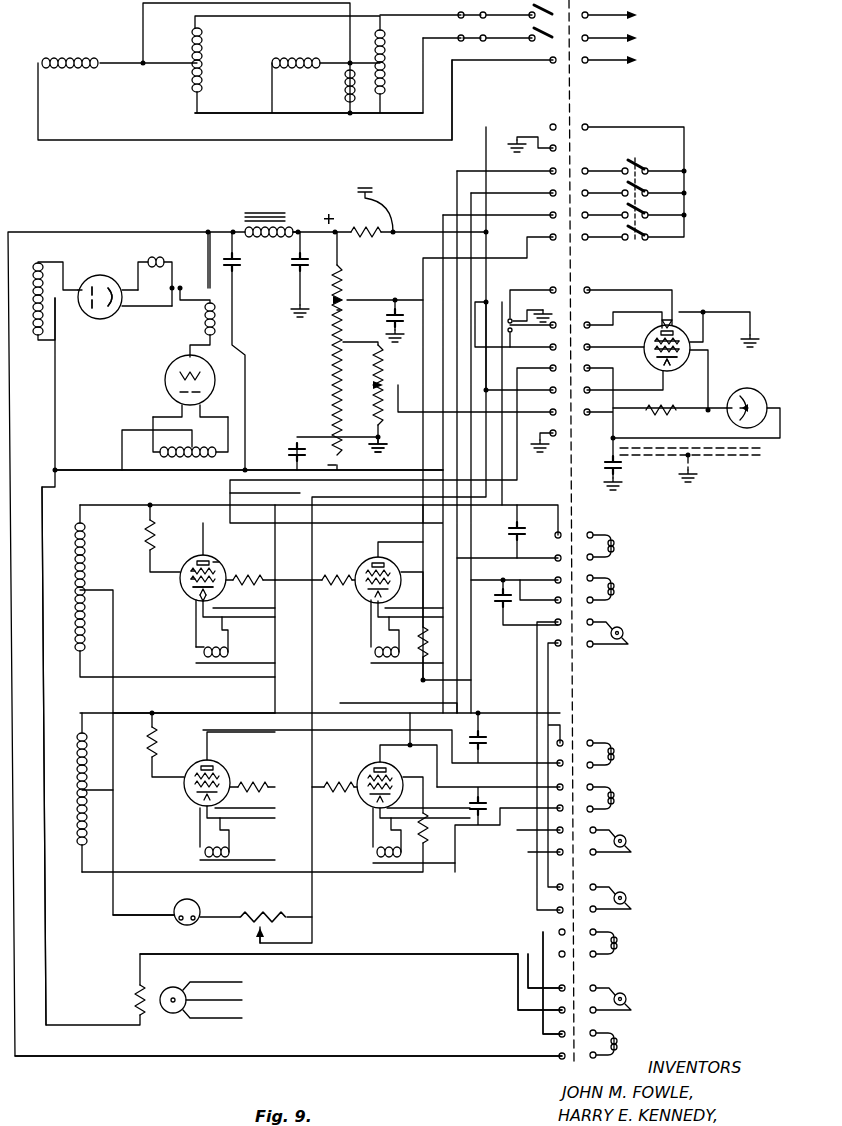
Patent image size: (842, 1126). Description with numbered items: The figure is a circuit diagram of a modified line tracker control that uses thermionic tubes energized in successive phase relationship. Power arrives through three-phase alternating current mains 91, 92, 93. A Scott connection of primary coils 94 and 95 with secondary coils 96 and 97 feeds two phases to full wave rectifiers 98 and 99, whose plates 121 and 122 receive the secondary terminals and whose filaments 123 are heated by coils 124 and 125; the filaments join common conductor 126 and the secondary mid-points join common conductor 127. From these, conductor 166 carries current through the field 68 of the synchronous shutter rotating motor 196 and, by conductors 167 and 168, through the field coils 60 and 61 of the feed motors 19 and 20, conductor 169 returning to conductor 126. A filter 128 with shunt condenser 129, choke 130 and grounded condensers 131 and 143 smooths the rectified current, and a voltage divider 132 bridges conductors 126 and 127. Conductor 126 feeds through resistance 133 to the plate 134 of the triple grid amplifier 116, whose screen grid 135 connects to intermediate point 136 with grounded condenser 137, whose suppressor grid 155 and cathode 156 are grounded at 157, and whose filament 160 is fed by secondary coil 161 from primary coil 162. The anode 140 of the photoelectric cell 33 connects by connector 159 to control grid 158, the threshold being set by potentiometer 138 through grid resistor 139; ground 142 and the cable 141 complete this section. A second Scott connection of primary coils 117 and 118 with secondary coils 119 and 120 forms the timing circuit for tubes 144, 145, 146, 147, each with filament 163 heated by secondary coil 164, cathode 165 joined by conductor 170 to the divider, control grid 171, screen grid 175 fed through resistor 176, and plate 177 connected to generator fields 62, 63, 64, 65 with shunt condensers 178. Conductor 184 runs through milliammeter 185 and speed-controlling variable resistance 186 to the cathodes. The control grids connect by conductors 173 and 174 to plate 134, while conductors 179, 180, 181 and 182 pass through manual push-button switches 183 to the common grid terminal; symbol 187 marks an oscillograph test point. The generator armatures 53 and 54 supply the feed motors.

The primary coil 95 is at (70, 52).
The primary coil 94 is at (205, 62).
The primary coil 118 is at (296, 58).
The primary coil 117 is at (386, 56).
The primary coil 162 is at (346, 91).
The alternating current main 91 is at (433, 16).
The alternating current main 93 is at (453, 95).
The alternating current main 92 is at (418, 114).
The common conductor 126 is at (209, 228).
The choke 130 is at (262, 208).
The filter 128 is at (292, 224).
The oscillograph connection symbol 187 is at (370, 188).
The resistance 133 is at (382, 236).
The conductor 181 is at (510, 171).
The conductor 182 is at (522, 193).
The conductor 179 is at (542, 215).
The shunt condenser 129 is at (243, 265).
The grounded condenser 131 is at (290, 272).
The intermediate point of voltage divider 136 is at (350, 300).
The voltage divider 132 is at (332, 312).
The grounded condenser 137 is at (384, 317).
The potentiometer 138 is at (384, 361).
The ground 142 is at (385, 440).
The grounded condenser 143 is at (292, 452).
The secondary coil 161 is at (509, 297).
The conductor 173 is at (492, 328).
The conductor 174 is at (548, 394).
The secondary coil 96 is at (42, 335).
The full wave rectifier 98 is at (117, 320).
The plate 121 is at (97, 275).
The filament 123 is at (112, 284).
The plate 122 is at (88, 320).
The filament heating coil 124 is at (168, 262).
The filament heating coil 125 is at (203, 308).
The full wave rectifier 99 is at (165, 383).
The secondary coil 97 is at (158, 450).
The conductor 166 is at (44, 510).
The common conductor 127 is at (201, 480).
The resistor 176 is at (146, 525).
The secondary coil 119 is at (84, 552).
The thermionic tube 145 is at (200, 555).
The screen grid 175 is at (220, 563).
The plate 177 is at (186, 565).
The control grid 171 is at (182, 588).
The cathode 165 is at (185, 594).
The filament 163 is at (203, 604).
The secondary coil 164 is at (236, 652).
The conductor 170 is at (310, 552).
The thermionic tube 147 is at (372, 558).
The conductor 180 is at (422, 513).
The condenser 178 is at (508, 533).
The conductor 184 is at (113, 693).
The thermionic tube 146 is at (204, 758).
The thermionic tube 144 is at (372, 759).
The secondary coil 120 is at (80, 846).
The milliammeter 185 is at (177, 905).
The variable resistance 186 is at (268, 902).
The conductor 167 is at (394, 950).
The field of synchronous motor 68 is at (136, 982).
The shutter rotating motor 196 is at (178, 1012).
The conductor 169 is at (412, 1056).
The conductor 168 is at (542, 1020).
The manually operated switches 183 is at (690, 190).
The triple grid amplifier 116 is at (682, 372).
The filament 160 is at (670, 314).
The cathode 156 is at (655, 334).
The control grid 158 is at (650, 348).
The screen grid 135 is at (657, 358).
The plate 134 is at (660, 366).
The suppressor grid 155 is at (690, 332).
The ground 157 is at (758, 332).
The connector 159 is at (708, 366).
The photoelectric cell 33 is at (757, 388).
The grid resistor 139 is at (665, 415).
The anode 140 is at (727, 425).
The shielded cable 141 is at (770, 440).
The north generator field coil 62 is at (615, 546).
The south generator field coil 63 is at (615, 589).
The generator armature 53 is at (623, 631).
The east generator field 65 is at (615, 752).
The west generator field 64 is at (615, 798).
The generator armature 54 is at (626, 839).
The feed motor 19 is at (626, 896).
The feed motor field coil 60 is at (618, 943).
The feed motor 20 is at (626, 997).
The feed motor field coil 61 is at (618, 1043).